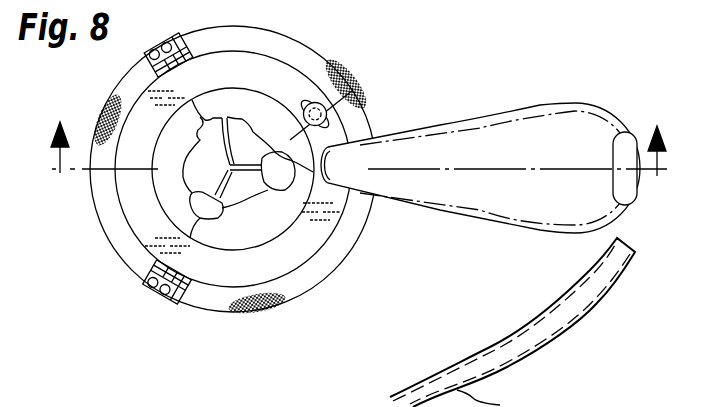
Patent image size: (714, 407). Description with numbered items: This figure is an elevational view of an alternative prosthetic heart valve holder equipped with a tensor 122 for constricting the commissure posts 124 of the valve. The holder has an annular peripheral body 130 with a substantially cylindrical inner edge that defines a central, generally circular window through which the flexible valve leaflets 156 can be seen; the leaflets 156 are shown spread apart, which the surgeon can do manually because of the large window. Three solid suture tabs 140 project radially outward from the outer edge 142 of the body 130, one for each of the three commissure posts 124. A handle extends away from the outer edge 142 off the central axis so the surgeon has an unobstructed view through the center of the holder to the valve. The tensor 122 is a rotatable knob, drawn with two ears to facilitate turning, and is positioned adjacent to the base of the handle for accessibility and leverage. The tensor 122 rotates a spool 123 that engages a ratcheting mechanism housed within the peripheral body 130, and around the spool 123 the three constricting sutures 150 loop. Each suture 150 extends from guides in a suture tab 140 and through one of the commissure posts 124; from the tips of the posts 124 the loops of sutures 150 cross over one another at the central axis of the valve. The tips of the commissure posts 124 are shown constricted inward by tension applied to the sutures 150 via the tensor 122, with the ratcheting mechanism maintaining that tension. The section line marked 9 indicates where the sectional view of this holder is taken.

The section line 9- 9 is at (359, 134).
The tensor 122 is at (353, 90).
The spool 123 is at (328, 117).
The commissure posts 124 is at (240, 200).
The peripheral body 130 is at (86, 221).
The suture tabs 140 is at (153, 297).
The outer edge 142 is at (208, 313).
The sutures 150 is at (232, 172).
The leaflets 156 is at (188, 191).